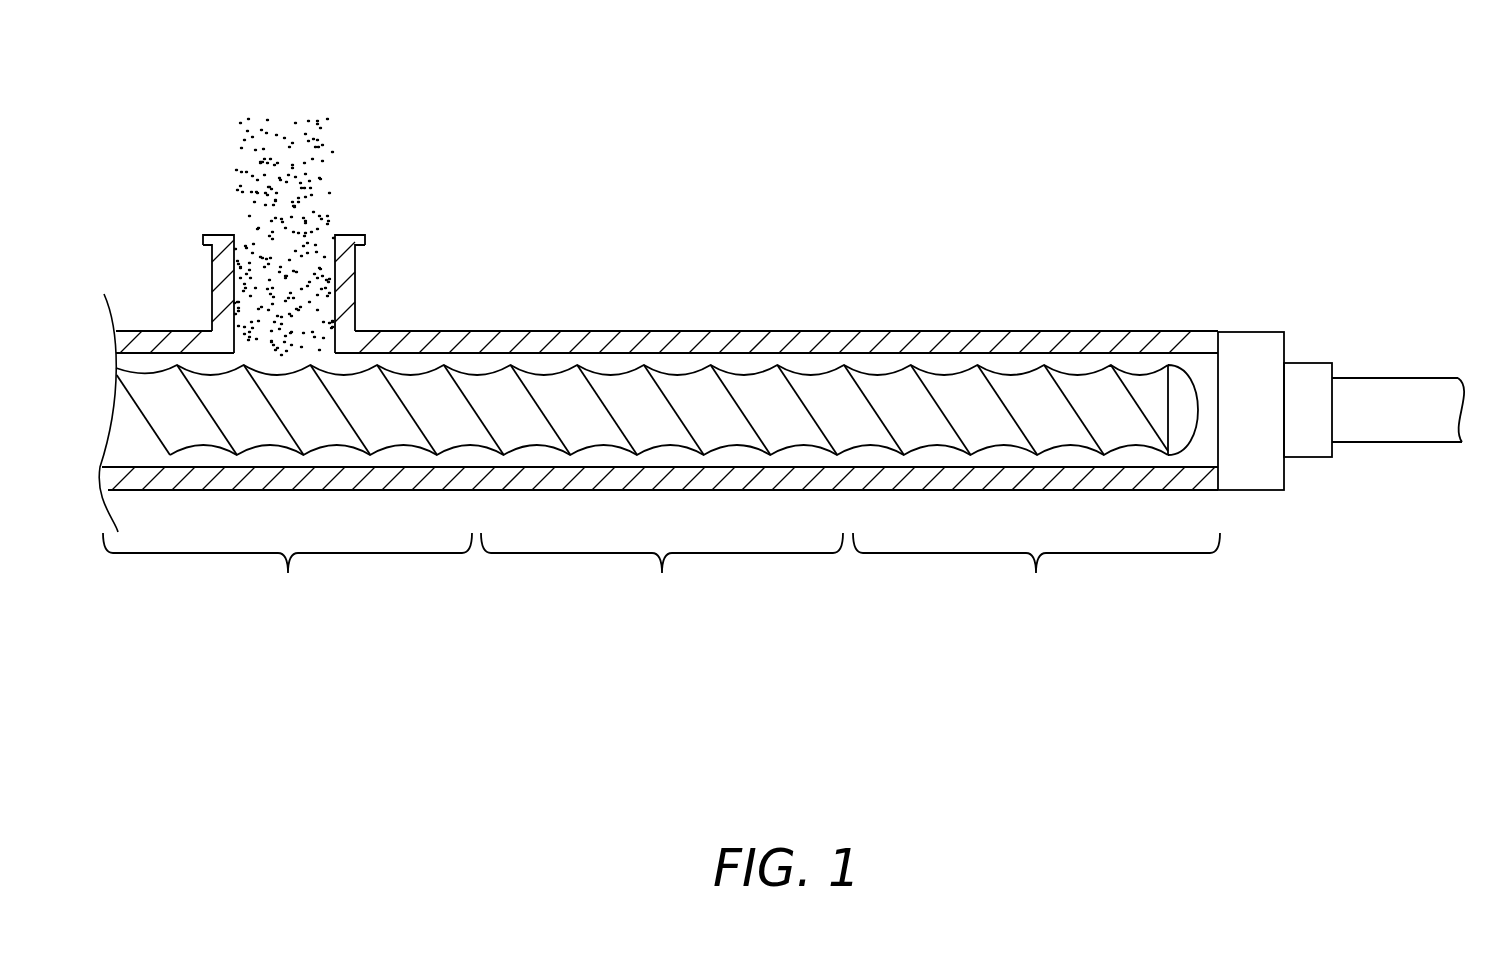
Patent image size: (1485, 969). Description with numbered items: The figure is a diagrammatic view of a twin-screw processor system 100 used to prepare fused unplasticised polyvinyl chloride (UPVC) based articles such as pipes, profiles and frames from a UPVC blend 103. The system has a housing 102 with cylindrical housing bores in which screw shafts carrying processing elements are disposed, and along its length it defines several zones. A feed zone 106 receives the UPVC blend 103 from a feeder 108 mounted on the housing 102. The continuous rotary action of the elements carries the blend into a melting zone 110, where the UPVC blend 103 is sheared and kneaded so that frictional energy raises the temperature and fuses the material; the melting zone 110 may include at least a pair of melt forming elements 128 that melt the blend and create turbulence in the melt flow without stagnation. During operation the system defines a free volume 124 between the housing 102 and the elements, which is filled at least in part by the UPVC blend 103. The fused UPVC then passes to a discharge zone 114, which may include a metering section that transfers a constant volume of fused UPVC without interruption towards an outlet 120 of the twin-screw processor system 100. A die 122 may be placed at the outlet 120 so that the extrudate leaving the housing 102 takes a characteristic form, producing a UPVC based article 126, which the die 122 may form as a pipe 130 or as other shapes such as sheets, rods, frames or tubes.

The twin-screw processor system 100 is at (1153, 98).
The housing 102 is at (847, 330).
The UPVC blend 103 is at (298, 172).
The feed zone 106 is at (287, 573).
The feeder 108 is at (357, 288).
The melting zone 110 is at (662, 573).
The discharge zone 114 is at (1036, 573).
The outlet 120 is at (1285, 472).
The die 122 is at (1333, 365).
The free volume 124 is at (538, 363).
The UPVC based article 126 is at (1372, 443).
The melt forming elements 128 is at (712, 368).
The pipe 130 is at (1440, 442).